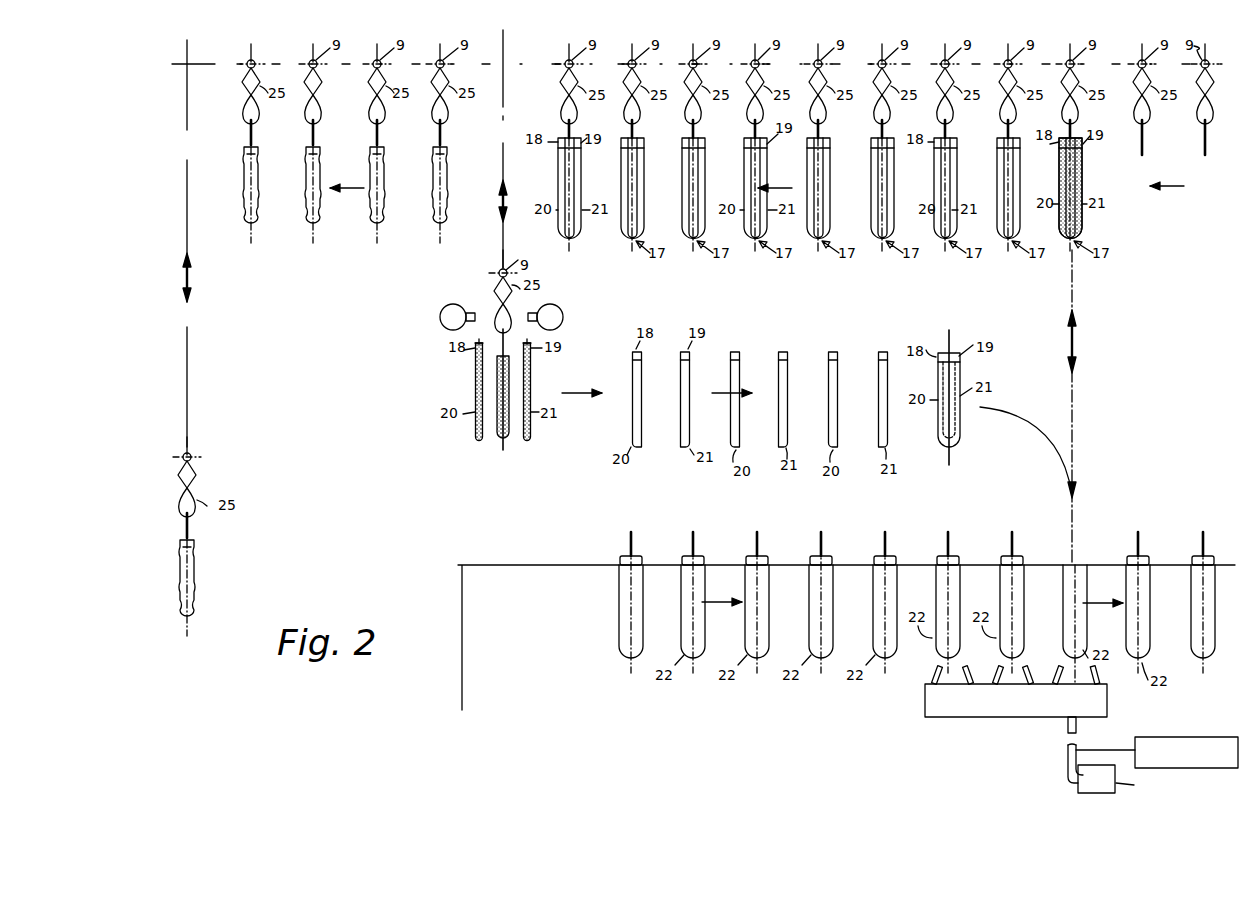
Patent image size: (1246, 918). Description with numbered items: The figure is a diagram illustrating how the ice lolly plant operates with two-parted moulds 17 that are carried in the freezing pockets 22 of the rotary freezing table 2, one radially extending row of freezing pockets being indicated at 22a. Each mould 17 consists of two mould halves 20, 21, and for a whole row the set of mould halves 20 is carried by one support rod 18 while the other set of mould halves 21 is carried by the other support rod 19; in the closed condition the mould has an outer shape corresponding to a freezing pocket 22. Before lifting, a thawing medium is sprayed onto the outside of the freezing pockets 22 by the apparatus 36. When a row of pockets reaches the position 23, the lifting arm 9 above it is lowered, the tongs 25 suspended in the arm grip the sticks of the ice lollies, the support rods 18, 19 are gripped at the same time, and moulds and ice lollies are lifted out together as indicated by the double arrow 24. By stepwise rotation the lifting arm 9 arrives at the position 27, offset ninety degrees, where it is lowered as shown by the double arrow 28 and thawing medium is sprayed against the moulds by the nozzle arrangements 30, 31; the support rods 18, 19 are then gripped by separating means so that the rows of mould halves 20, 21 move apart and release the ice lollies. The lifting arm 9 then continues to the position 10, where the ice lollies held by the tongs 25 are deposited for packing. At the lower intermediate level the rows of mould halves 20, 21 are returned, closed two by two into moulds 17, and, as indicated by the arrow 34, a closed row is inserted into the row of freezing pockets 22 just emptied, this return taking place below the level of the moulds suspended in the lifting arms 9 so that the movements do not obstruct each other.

The rotary freezing table 2 is at (510, 556).
The lifting arm 9 is at (254, 60).
The position 10 is at (190, 62).
The two-parted mould 17 is at (573, 241).
The support rod 18 is at (744, 146).
The support rod 19 is at (957, 144).
The mould half 20 is at (621, 210).
The mould half 21 is at (700, 210).
The freezing pocket 22 is at (621, 655).
The row of freezing pockets 22a is at (1150, 662).
The position 23 is at (1076, 567).
The double arrow 24 is at (1070, 350).
The tongs 25 is at (322, 86).
The position 27 is at (506, 62).
The double arrow 28 is at (498, 204).
The nozzle arrangement 30 is at (439, 318).
The nozzle arrangement 31 is at (563, 316).
The arrow 34 is at (1018, 412).
The thawing medium spraying apparatus 36 is at (980, 717).